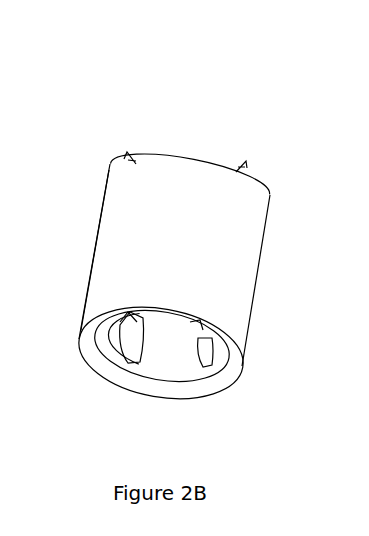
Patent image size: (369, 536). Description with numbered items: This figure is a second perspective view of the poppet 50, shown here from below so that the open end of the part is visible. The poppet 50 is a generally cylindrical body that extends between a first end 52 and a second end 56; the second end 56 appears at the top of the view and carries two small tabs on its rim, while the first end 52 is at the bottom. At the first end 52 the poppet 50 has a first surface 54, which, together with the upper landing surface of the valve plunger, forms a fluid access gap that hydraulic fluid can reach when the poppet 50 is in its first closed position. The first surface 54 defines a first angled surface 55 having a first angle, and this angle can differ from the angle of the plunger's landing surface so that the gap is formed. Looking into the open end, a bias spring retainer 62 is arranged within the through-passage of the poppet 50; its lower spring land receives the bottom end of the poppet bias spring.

The poppet 50 is at (173, 142).
The first end 52 is at (100, 298).
The first surface 54 is at (138, 380).
The first angled surface 55 is at (162, 374).
The second end 56 is at (122, 182).
The bias spring retainer 62 is at (133, 332).